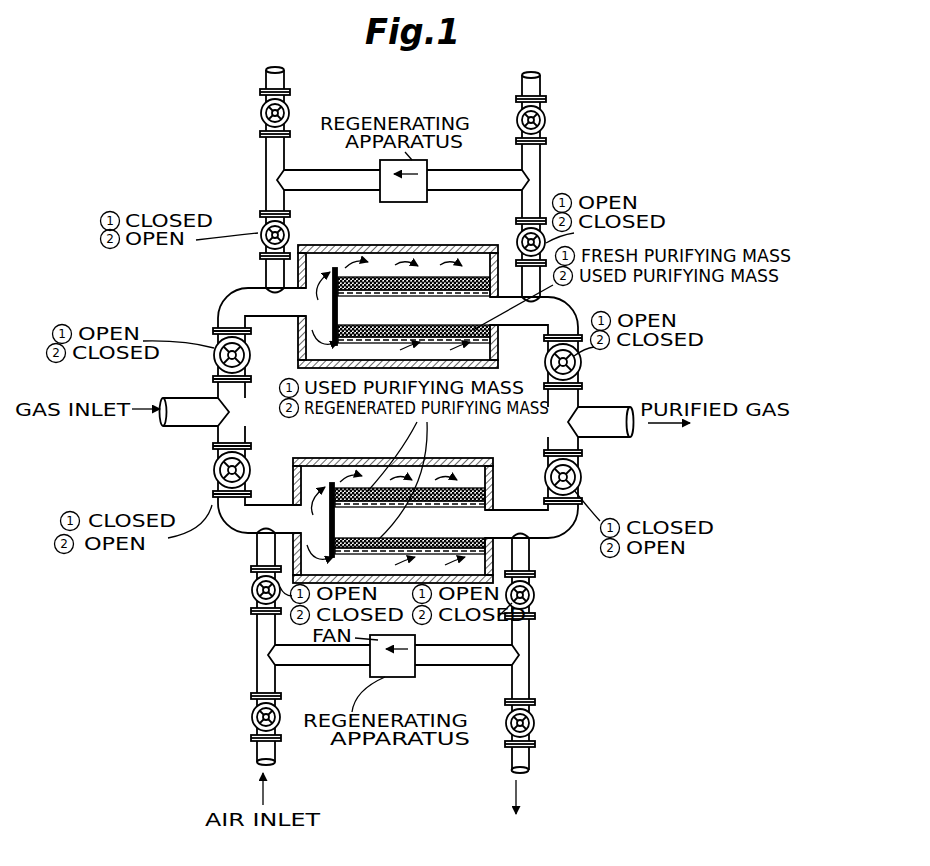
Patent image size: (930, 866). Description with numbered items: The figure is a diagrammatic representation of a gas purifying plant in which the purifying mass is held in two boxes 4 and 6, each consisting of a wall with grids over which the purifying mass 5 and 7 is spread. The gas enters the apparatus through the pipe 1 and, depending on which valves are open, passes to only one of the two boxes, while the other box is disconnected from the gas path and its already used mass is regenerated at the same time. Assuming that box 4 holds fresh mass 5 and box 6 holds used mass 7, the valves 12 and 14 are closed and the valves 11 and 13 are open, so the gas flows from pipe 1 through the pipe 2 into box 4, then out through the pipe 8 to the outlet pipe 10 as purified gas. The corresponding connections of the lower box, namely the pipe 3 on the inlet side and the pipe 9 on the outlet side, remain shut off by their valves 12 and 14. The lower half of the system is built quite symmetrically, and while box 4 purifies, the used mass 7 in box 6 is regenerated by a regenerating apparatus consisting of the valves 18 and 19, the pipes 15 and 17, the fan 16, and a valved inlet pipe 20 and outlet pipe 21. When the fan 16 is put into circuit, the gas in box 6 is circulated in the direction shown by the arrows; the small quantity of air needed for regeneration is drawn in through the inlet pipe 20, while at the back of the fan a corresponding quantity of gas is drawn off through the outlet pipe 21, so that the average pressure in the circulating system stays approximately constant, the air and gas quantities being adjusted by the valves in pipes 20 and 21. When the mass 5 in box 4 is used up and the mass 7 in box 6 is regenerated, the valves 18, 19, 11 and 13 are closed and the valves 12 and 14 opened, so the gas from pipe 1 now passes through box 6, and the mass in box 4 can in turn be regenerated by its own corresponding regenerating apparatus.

The pipe 1 is at (193, 420).
The pipe 2 is at (237, 297).
The lower inlet branch pipe 3 is at (222, 528).
The box 4 is at (336, 245).
The purifying mass 5 is at (450, 280).
The box 6 is at (342, 458).
The purifying mass 7 is at (451, 501).
The pipe 8 is at (556, 311).
The lower outlet branch pipe 9 is at (512, 520).
The outlet pipe 10 is at (603, 431).
The valve 11 is at (212, 353).
The valve 12 is at (212, 476).
The valve 13 is at (581, 362).
The valve 14 is at (578, 486).
The pipe 15 is at (267, 627).
The fan 16 is at (392, 667).
The pipe 17 is at (518, 637).
The valve 18 is at (251, 593).
The valve 19 is at (535, 602).
The inlet pipe 20 is at (262, 748).
The outlet pipe 21 is at (520, 758).